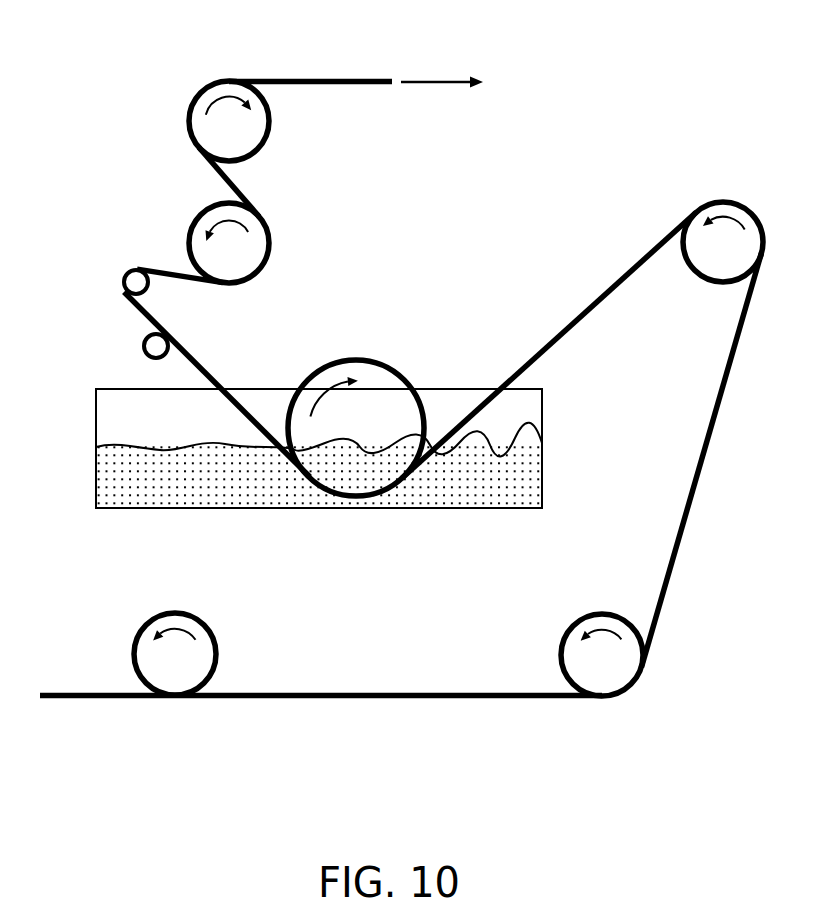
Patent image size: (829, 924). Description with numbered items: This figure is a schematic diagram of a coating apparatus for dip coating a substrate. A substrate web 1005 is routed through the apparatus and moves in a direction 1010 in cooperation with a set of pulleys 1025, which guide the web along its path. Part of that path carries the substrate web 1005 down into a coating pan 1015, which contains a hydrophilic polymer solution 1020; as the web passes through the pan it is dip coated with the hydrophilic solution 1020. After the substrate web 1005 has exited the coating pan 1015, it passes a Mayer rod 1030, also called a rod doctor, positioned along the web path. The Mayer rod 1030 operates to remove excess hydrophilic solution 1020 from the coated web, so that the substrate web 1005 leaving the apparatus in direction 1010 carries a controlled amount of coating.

The substrate web 1005 is at (349, 80).
The direction 1010 is at (437, 83).
The coating pan 1015 is at (543, 408).
The hydrophilic polymer solution 1020 is at (521, 486).
The pulleys 1025 is at (252, 129).
The Mayer rod 1030 is at (157, 346).